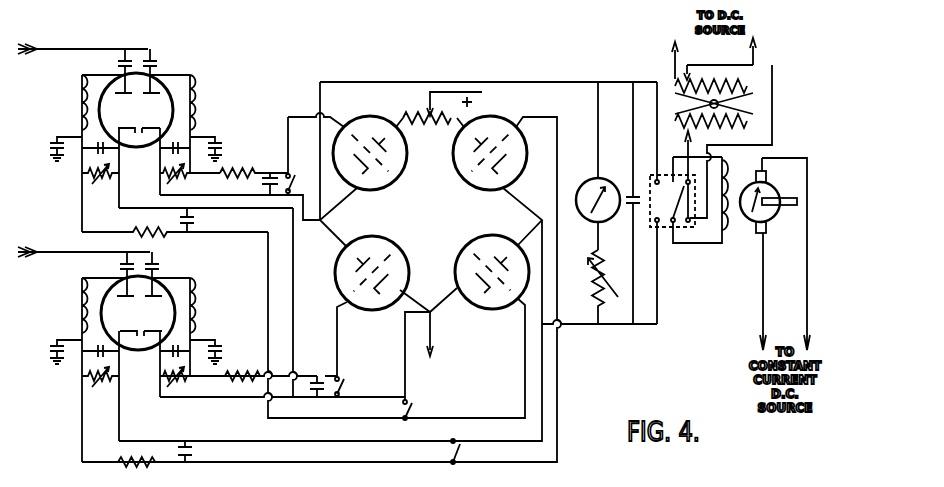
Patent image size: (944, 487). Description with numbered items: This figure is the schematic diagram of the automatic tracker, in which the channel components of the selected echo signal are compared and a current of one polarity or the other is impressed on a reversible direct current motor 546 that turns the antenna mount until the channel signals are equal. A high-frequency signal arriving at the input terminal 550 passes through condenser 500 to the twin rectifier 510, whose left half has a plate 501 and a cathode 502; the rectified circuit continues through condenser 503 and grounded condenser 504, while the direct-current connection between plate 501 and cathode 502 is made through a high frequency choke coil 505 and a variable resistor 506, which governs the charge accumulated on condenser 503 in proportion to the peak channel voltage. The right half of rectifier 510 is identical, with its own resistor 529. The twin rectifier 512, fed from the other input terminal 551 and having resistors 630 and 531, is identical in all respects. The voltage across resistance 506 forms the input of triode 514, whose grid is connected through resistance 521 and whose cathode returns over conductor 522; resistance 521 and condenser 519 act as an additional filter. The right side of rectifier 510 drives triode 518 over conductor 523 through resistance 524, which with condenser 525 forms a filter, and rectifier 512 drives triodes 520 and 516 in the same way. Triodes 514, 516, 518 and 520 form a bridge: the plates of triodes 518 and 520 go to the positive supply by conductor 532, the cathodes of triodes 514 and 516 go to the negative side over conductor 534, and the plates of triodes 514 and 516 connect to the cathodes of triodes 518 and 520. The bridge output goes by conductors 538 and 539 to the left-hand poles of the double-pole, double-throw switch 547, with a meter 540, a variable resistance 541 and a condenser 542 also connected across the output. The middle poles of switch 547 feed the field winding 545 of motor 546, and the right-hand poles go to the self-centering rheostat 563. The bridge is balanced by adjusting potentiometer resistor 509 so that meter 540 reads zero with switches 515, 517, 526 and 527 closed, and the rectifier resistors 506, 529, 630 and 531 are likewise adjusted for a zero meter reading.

The condenser 500 is at (118, 63).
The plate 501 is at (117, 93).
The cathode 502 is at (123, 132).
The condenser 503 is at (99, 153).
The grounded condenser 504 is at (55, 141).
The high frequency choke coil 505 is at (80, 88).
The variable resistor 506 is at (110, 182).
The potentiometer resistor 509 is at (424, 114).
The twin rectifier 510 is at (158, 81).
The twin rectifier 512 is at (167, 287).
The triode 514 is at (481, 240).
The switch 515 is at (292, 186).
The triode 516 is at (399, 242).
The switch 517 is at (341, 387).
The triode 518 is at (368, 117).
The condenser 519 is at (196, 219).
The triode 520 is at (495, 118).
The resistance 521 is at (158, 233).
The conductor 522 is at (293, 284).
The conductor 523 is at (319, 223).
The resistance 524 is at (226, 172).
The condenser 525 is at (270, 178).
The switch 526 is at (413, 409).
The switch 527 is at (459, 448).
The resistor 529 is at (176, 170).
The resistor 531 is at (179, 378).
The conductor 532 is at (447, 92).
The conductor 534 is at (433, 346).
The conductor 538 is at (580, 81).
The conductor 539 is at (585, 326).
The meter 540 is at (585, 219).
The variable resistance 541 is at (595, 287).
The condenser 542 is at (632, 196).
The field winding 545 is at (728, 230).
The reversible direct current motor 546 is at (767, 184).
The double-pole, double-throw switch 547 is at (672, 179).
The input terminal 550 is at (105, 49).
The input terminal 551 is at (97, 254).
The self-centering rheostat 563 is at (700, 88).
The resistor 630 is at (91, 383).